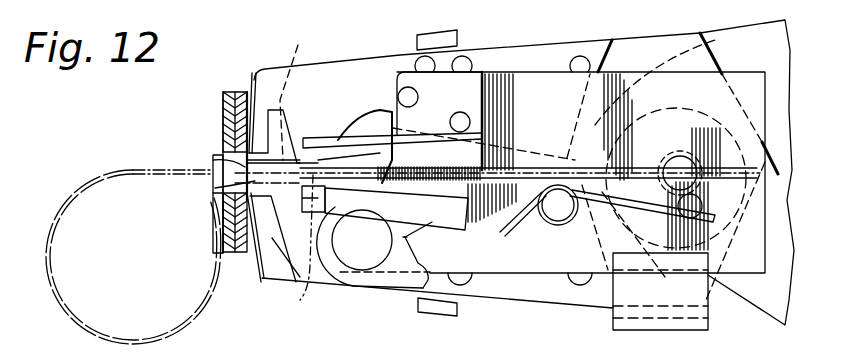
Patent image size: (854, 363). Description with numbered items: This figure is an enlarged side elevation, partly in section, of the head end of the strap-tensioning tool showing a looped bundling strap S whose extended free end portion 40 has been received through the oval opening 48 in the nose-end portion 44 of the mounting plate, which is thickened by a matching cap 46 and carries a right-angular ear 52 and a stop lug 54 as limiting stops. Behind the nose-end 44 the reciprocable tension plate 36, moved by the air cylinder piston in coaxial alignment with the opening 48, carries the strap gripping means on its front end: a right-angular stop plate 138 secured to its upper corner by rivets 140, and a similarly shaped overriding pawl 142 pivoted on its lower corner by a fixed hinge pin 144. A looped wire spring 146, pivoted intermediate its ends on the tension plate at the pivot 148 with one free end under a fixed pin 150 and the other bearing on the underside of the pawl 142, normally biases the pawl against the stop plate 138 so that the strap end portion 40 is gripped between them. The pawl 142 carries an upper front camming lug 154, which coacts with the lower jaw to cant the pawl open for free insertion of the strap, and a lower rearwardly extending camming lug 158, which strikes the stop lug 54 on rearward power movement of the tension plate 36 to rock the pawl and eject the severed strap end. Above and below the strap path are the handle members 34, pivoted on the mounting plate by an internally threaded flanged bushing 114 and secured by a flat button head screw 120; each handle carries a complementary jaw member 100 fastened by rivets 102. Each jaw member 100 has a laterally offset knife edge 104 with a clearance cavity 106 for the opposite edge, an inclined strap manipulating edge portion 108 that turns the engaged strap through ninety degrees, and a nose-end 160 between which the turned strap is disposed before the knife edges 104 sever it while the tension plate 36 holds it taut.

The looped bundling strap S is at (86, 186).
The handle members 34 is at (752, 40).
The tension plate 36 is at (632, 74).
The extended free end portion of the strap 40 is at (560, 168).
The nose-end portion of the mounting plate 44 is at (240, 92).
The matching cap 46 is at (228, 92).
The oval opening 48 is at (233, 156).
The ear 52 is at (450, 36).
The stop lug 54 is at (670, 307).
The jaw member 100 is at (336, 66).
The rivets 102 is at (580, 68).
The knife edge 104 is at (288, 78).
The clearance cavity 106 is at (232, 128).
The inclined strap manipulating edge portion 108 is at (262, 200).
The flanged bushing 114 is at (672, 108).
The button head screw 120 is at (686, 158).
The stop plate 138 is at (482, 101).
The rivets 140 is at (450, 120).
The overriding pawl 142 is at (437, 205).
The hinge pin 144 is at (376, 247).
The looped wire spring 146 is at (498, 232).
The spring pivot 148 is at (557, 216).
The fixed pin 150 is at (694, 203).
The front camming lug 154 is at (330, 193).
The rear camming lug 158 is at (412, 280).
The nose-ends of the jaw members 160 is at (262, 138).